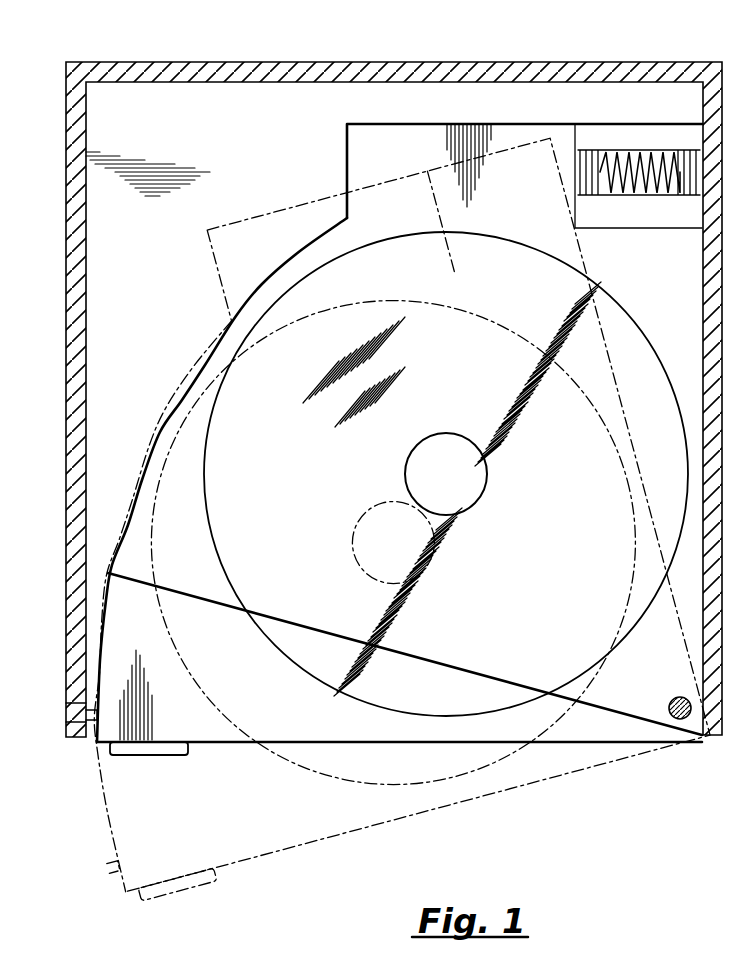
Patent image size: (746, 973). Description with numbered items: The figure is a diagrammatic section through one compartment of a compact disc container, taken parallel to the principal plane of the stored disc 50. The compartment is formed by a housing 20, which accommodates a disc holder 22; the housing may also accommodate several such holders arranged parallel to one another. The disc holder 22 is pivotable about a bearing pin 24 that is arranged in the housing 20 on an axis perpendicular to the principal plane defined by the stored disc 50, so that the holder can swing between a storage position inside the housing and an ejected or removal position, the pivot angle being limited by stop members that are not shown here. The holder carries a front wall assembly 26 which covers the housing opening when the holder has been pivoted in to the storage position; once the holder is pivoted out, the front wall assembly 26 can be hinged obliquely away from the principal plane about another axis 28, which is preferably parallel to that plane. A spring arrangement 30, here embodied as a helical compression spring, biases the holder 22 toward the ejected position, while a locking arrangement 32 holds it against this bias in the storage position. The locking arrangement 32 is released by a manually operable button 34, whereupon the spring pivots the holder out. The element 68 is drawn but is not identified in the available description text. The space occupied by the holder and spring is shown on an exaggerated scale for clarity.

The housing 20 is at (378, 62).
The disc holder 22 is at (161, 430).
The bearing pin 24 is at (680, 720).
The front wall assembly 26 is at (248, 716).
The axis 28 is at (220, 607).
The spring arrangement 30 is at (638, 143).
The locking arrangement 32 is at (88, 714).
The manually operable button 34 is at (146, 753).
The disc 50 is at (623, 337).
The stop ledge 68 is at (76, 720).